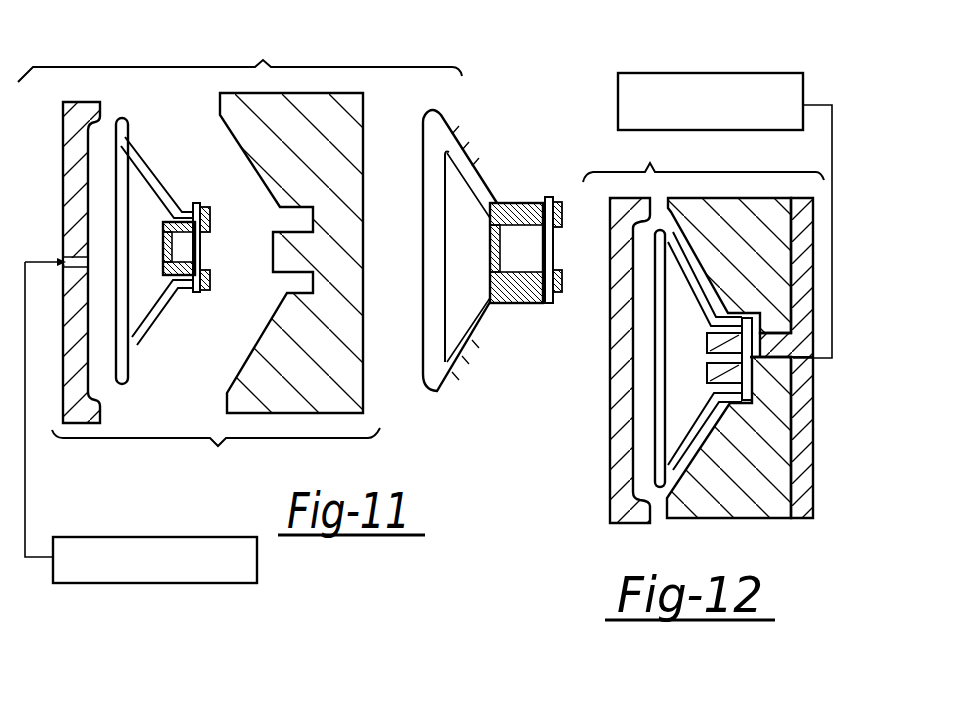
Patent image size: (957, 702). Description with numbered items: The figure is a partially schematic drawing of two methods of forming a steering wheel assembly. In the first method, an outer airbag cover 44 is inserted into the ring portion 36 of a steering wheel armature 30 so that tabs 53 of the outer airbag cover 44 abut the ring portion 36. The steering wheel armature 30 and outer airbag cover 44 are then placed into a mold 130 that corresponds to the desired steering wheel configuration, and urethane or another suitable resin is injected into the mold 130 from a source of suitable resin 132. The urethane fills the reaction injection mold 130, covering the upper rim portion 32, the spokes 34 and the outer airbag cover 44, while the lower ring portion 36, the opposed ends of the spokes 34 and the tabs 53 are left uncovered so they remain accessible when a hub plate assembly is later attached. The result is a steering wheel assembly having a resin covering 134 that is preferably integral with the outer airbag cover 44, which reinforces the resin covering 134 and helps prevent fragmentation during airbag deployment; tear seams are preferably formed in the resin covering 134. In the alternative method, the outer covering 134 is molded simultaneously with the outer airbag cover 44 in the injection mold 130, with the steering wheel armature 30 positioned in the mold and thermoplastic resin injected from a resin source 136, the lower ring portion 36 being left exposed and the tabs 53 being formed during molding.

In FIG. 11, the steering wheel armature 30 is at (121, 114).
In FIG. 12, the steering wheel armature 30 is at (678, 214).
In FIG. 11, the upper rim portion 32 is at (120, 198).
In FIG. 12, the upper rim portion 32 is at (658, 350).
In FIG. 11, the spokes 34 is at (138, 335).
In FIG. 12, the spokes 34 is at (703, 300).
In FIG. 11, the ring portion 36 is at (200, 252).
In FIG. 12, the ring portion 36 is at (755, 395).
In FIG. 11, the outer airbag cover 44 is at (165, 268).
In FIG. 11, the tabs 53 is at (200, 207).
In FIG. 11, the mold 130 is at (240, 269).
In FIG. 12, the mold 130 is at (703, 160).
In FIG. 11, the source of resin 132 is at (173, 583).
In FIG. 11, the resin covering 134 is at (487, 244).
In FIG. 12, the resin source 136 is at (743, 73).